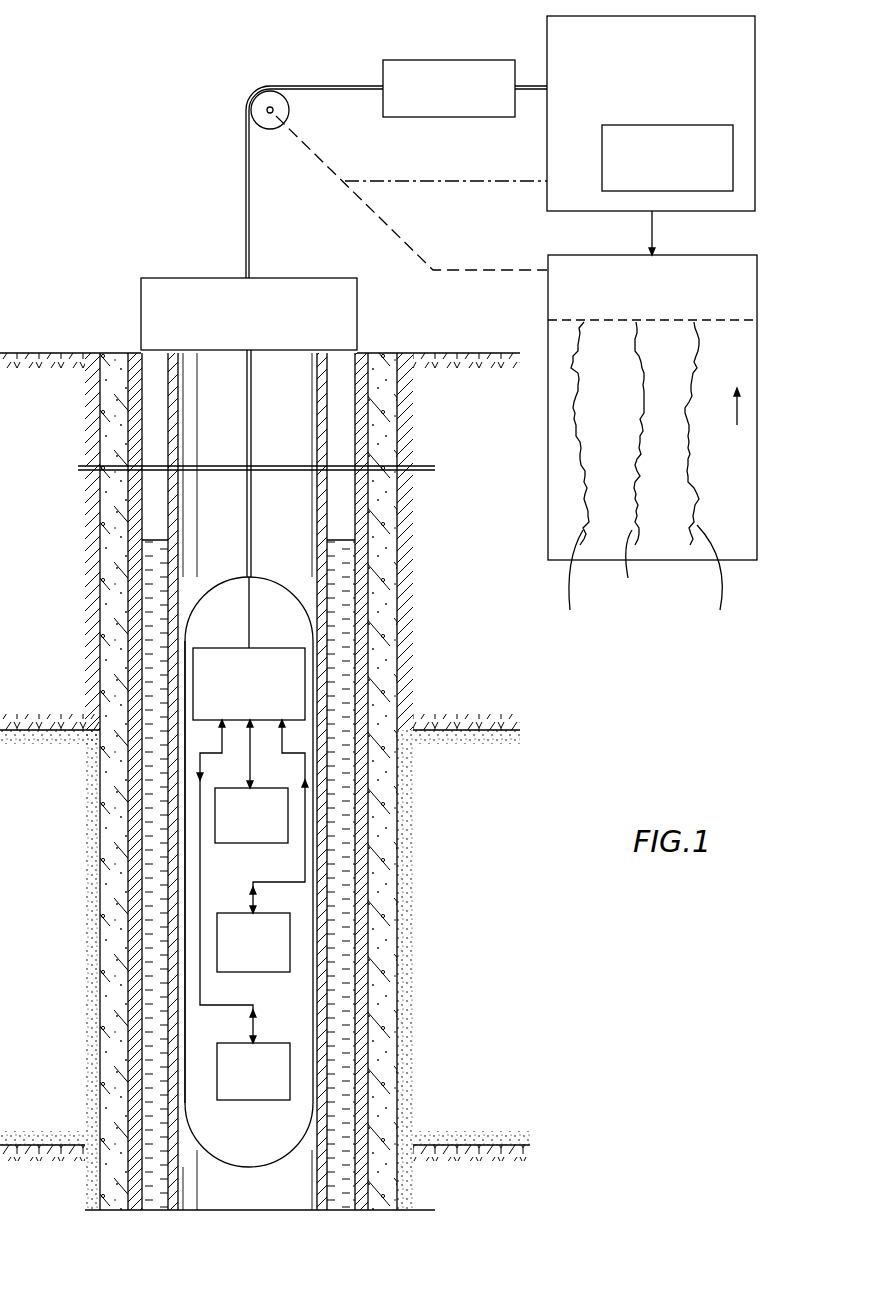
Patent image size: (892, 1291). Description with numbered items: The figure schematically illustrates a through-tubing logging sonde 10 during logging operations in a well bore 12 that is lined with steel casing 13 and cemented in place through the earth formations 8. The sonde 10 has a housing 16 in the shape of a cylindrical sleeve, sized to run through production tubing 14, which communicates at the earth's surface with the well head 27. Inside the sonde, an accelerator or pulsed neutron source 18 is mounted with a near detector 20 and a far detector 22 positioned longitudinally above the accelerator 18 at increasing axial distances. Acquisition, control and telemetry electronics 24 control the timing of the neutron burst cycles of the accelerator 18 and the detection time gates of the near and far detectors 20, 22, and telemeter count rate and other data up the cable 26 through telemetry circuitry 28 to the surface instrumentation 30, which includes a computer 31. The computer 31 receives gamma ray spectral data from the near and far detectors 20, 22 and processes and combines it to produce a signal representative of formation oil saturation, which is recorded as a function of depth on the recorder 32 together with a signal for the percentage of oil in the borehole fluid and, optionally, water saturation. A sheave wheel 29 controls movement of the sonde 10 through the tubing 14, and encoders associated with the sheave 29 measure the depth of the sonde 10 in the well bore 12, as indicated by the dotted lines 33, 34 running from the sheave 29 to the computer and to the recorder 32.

The formations 8 is at (452, 985).
The logging sonde 10 is at (292, 628).
The well bore 12 is at (150, 548).
The steel casing 13 is at (132, 602).
The tubing 14 is at (332, 1147).
The housing 16 is at (188, 1070).
The accelerator or pulsed neutron source 18 is at (290, 1055).
The near detector 20 is at (290, 935).
The far detector 22 is at (213, 820).
The acquisition, control and telemetry electronics 24 is at (193, 663).
The cable 26 is at (256, 92).
The well head 27 is at (175, 278).
The telemetry circuitry 28 is at (449, 60).
The sheave wheel 29 is at (257, 111).
The surface instrumentation 30 is at (757, 53).
The computer 31 is at (733, 162).
The recorder 32 is at (757, 290).
The dotted line 33 is at (456, 186).
The dotted line 34 is at (432, 270).